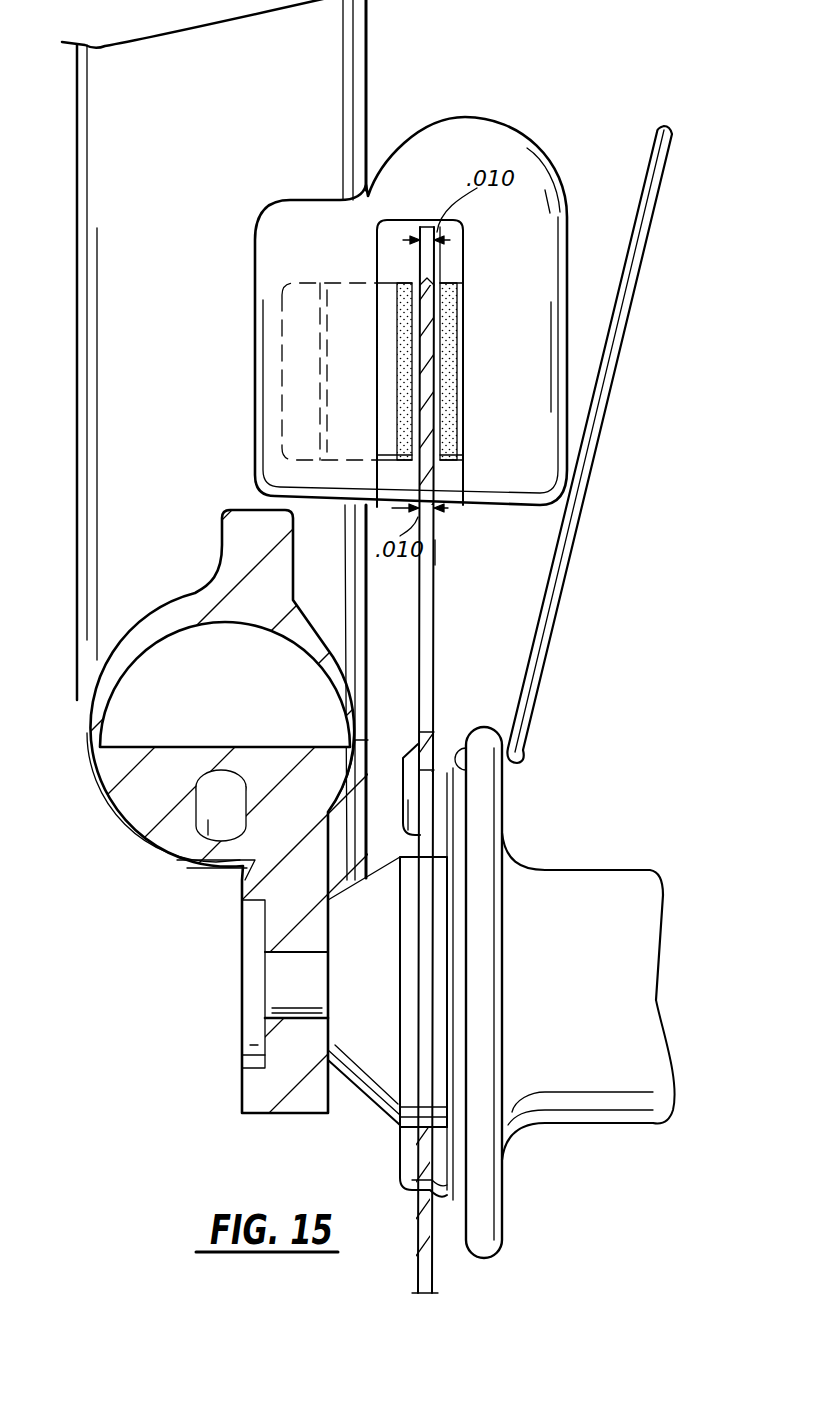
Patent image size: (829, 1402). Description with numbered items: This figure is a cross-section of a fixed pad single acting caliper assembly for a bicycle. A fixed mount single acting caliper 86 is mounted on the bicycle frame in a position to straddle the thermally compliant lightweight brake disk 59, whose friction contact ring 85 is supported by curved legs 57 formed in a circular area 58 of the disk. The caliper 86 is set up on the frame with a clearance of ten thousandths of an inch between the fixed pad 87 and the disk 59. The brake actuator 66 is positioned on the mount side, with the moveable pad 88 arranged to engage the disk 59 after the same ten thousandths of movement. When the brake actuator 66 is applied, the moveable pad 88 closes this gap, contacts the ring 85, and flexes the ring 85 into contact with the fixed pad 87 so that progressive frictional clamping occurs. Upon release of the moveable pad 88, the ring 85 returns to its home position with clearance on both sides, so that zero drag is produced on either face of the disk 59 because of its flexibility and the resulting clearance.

The curved legs 57 is at (437, 605).
The circular area 58 is at (430, 752).
The lightweight brake disk 59 is at (437, 552).
The brake actuator 66 is at (322, 403).
The friction contact ring 85 is at (430, 282).
The fixed mount single acting caliper 86 is at (528, 116).
The fixed pad 87 is at (447, 273).
The moveable pad 88 is at (405, 272).